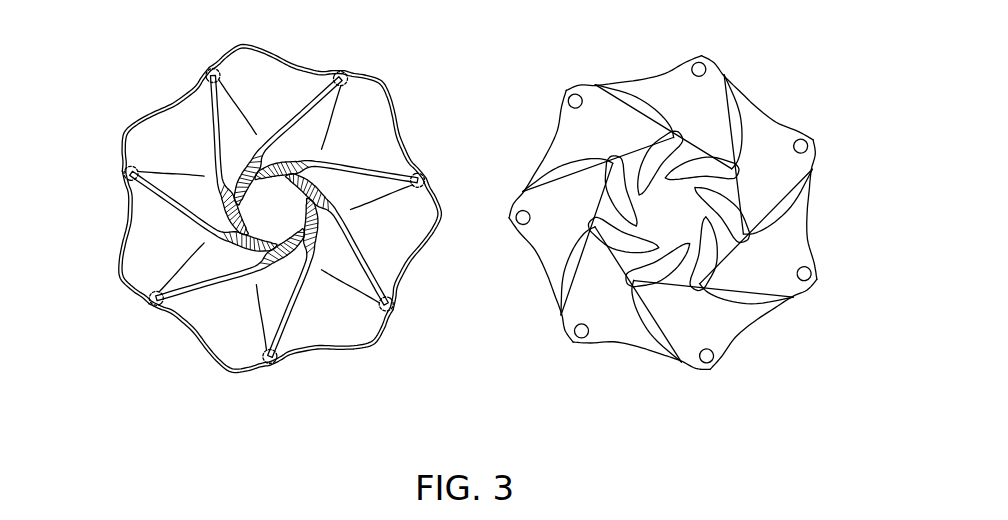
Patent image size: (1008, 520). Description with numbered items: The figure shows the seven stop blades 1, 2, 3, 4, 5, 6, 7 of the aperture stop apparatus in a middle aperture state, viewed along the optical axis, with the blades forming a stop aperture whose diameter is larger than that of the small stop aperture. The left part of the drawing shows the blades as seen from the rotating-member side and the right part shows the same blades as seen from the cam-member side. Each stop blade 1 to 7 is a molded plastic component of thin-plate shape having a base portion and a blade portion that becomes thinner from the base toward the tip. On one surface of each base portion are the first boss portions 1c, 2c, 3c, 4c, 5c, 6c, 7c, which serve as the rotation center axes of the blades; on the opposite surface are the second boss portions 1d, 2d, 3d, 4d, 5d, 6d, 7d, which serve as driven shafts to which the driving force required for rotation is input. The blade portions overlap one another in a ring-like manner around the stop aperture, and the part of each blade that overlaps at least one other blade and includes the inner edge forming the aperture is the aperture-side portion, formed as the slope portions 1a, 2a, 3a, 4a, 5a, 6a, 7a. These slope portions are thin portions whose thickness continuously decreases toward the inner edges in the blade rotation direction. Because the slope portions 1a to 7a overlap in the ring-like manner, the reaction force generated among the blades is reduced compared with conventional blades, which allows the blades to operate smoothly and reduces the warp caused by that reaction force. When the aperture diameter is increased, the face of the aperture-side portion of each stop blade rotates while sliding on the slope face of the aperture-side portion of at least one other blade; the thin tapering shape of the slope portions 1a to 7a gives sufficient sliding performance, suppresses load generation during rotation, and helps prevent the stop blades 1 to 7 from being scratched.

The stop blade 1 is at (365, 325).
The stop blade 2 is at (392, 228).
The stop blade 3 is at (363, 117).
The stop blade 4 is at (258, 66).
The stop blade 5 is at (170, 142).
The stop blade 6 is at (158, 257).
The stop blade 7 is at (228, 335).
The slope portion 1a is at (307, 278).
The slope portion 2a is at (343, 233).
The slope portion 3a is at (328, 157).
The slope portion 4a is at (278, 140).
The slope portion 5a is at (210, 177).
The slope portion 6a is at (167, 228).
The slope portion 7a is at (253, 278).
The first boss portion 1c is at (272, 366).
The first boss portion 2c is at (400, 307).
The first boss portion 3c is at (426, 182).
The first boss portion 4c is at (350, 76).
The first boss portion 5c is at (212, 70).
The first boss portion 6c is at (124, 170).
The first boss portion 7c is at (150, 300).
The second boss portion 1d is at (582, 338).
The second boss portion 2d is at (515, 220).
The second boss portion 3d is at (573, 96).
The second boss portion 4d is at (698, 63).
The second boss portion 5d is at (808, 140).
The second boss portion 6d is at (812, 272).
The second boss portion 7d is at (711, 363).